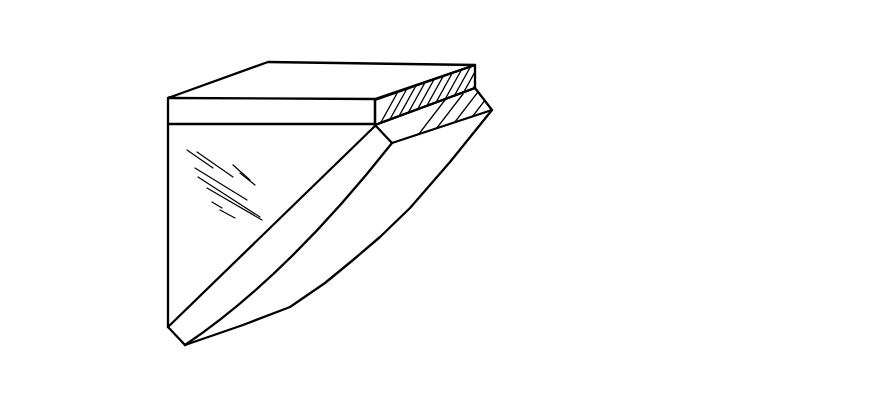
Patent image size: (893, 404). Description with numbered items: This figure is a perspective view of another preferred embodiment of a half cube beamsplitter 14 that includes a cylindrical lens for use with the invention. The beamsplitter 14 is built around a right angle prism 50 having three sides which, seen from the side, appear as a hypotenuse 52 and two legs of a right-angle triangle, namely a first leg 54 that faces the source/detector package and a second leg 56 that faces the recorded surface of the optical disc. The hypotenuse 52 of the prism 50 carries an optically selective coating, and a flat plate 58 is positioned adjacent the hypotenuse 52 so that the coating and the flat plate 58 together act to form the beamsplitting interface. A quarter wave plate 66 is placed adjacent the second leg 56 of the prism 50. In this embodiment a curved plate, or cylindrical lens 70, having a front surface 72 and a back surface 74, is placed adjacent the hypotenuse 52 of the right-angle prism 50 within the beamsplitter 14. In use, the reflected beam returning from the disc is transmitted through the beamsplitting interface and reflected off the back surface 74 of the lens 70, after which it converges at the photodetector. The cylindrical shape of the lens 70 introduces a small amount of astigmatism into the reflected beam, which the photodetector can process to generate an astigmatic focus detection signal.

The beamsplitter 14 is at (487, 170).
The right angle prism 50 is at (160, 262).
The hypotenuse 52 is at (306, 193).
The first leg 54 is at (168, 183).
The second leg 56 is at (208, 124).
The flat plate 58 is at (637, 6).
The quarter wave plate 66 is at (393, 73).
The cylindrical lens 70 is at (390, 191).
The front surface 72 is at (193, 304).
The back surface 74 is at (272, 283).